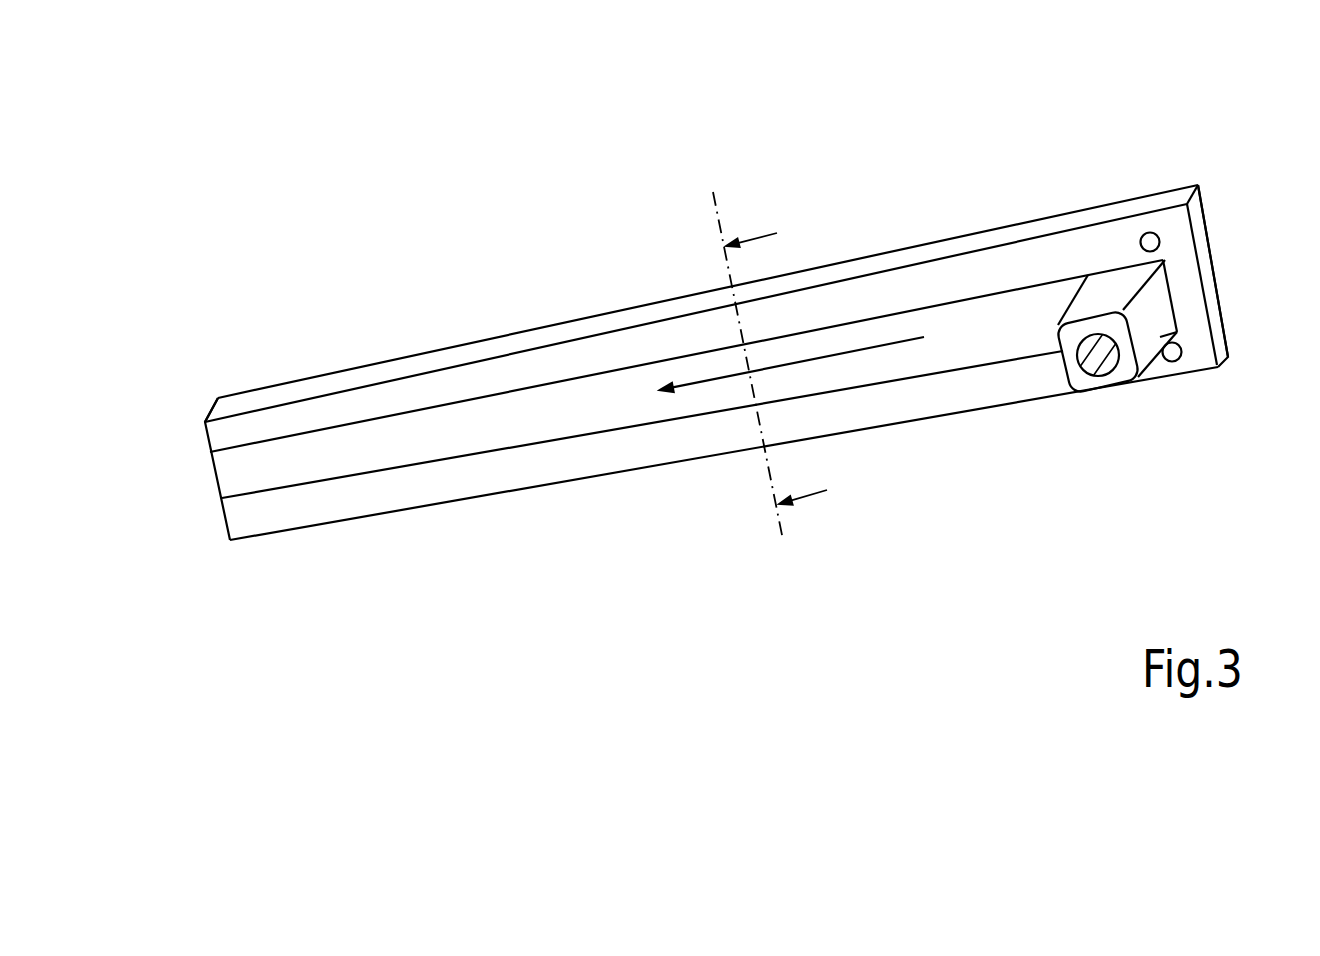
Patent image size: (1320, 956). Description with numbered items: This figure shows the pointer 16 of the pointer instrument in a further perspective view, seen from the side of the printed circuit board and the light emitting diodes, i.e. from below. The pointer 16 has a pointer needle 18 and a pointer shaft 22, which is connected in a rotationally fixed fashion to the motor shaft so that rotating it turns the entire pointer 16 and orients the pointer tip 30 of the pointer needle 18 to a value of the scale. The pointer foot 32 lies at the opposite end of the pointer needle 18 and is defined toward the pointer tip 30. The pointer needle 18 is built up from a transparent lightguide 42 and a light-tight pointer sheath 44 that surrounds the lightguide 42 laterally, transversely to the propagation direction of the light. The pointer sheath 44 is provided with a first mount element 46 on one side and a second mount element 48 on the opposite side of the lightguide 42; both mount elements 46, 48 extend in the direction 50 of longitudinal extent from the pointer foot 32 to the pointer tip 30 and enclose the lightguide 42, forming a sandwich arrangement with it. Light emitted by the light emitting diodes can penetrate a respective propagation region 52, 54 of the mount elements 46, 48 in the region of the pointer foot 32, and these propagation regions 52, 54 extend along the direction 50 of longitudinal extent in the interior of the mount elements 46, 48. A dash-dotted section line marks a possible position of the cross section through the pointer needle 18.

The pointer 16 is at (729, 313).
The pointer needle 18 is at (623, 503).
The pointer shaft 22 is at (1112, 392).
The pointer tip 30 is at (281, 353).
The pointer foot 32 is at (1108, 188).
The lightguide 42 is at (225, 478).
The pointer sheath 44 is at (1156, 192).
The first mount element 46 is at (917, 408).
The second mount element 48 is at (563, 333).
The direction of longitudinal extent 50 is at (866, 349).
The propagation region of the first mount element 52 is at (1182, 352).
The propagation region of the second mount element 54 is at (1160, 240).